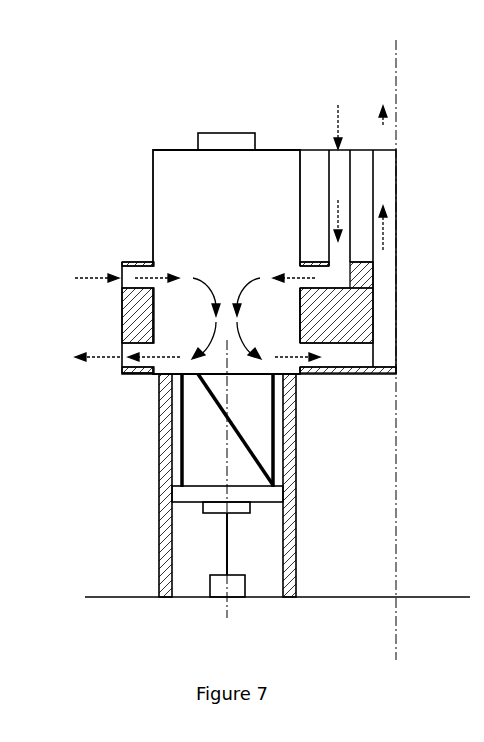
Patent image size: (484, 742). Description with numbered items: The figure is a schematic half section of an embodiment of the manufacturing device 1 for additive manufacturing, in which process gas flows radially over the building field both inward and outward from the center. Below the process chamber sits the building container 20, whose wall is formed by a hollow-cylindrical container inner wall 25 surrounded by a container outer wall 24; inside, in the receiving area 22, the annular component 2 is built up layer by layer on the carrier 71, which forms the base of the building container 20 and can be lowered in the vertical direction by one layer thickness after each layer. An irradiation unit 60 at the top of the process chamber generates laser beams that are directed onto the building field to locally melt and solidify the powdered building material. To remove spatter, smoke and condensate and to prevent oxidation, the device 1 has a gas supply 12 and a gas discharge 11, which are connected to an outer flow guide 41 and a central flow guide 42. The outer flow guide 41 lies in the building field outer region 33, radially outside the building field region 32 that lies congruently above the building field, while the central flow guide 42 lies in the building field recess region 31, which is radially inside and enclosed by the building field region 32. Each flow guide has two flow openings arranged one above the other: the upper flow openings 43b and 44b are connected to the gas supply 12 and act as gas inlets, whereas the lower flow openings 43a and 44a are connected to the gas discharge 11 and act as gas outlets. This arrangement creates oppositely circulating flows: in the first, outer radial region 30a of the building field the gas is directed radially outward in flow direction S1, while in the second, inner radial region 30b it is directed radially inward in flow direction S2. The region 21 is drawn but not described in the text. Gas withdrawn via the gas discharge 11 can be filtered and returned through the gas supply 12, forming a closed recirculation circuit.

The manufacturing device 1 is at (155, 72).
The component 2 is at (172, 440).
The gas discharge 11 is at (378, 148).
The gas supply 12 is at (118, 272).
The building container 20 is at (160, 533).
The lower cylinder space 21 is at (339, 483).
The receiving area 22 is at (196, 451).
The container outer wall 24 is at (165, 393).
The container inner wall 25 is at (298, 400).
The first radial region 30a is at (155, 368).
The second radial region 30b is at (302, 368).
The building field recess region 31 is at (412, 218).
The building field region 32 is at (219, 199).
The building field outer region 33 is at (130, 242).
The outer flow guide 41 is at (118, 270).
The central flow guide 42 is at (396, 368).
The flow opening 43a is at (154, 352).
The flow opening 43b is at (156, 270).
The flow opening 44a is at (300, 352).
The flow opening 44b is at (298, 268).
The irradiation unit 60 is at (258, 138).
The carrier 71 is at (180, 490).
The radial flow direction S1 is at (196, 342).
The radial flow direction S2 is at (256, 342).